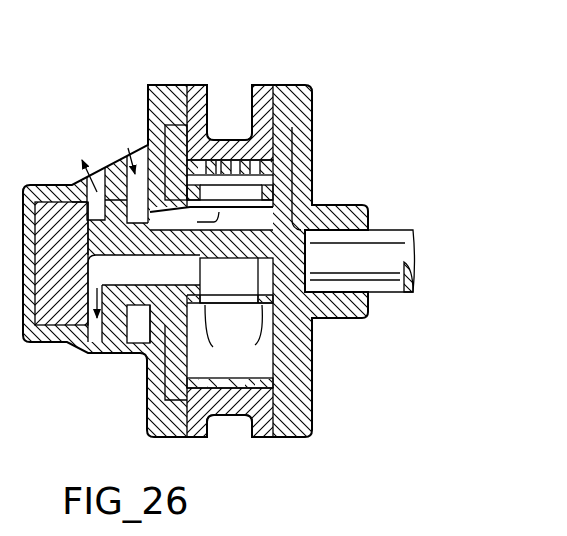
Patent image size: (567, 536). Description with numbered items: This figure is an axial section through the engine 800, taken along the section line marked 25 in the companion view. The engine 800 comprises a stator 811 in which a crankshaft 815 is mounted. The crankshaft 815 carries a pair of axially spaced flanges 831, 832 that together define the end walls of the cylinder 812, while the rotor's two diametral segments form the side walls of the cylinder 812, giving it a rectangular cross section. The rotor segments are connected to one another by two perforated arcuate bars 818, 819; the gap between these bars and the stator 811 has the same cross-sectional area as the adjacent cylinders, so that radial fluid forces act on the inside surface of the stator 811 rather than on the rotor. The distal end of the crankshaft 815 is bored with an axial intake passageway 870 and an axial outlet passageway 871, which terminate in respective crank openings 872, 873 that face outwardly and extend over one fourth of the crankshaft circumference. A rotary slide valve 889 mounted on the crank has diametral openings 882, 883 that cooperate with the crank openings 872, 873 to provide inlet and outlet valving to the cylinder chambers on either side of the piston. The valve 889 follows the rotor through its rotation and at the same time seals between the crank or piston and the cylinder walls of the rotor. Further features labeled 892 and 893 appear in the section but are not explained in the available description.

The engine 800 is at (381, 58).
The stator 811 is at (305, 87).
The crankshaft 815 is at (60, 198).
The perforated arcuate bar 818 is at (216, 168).
The perforated arcuate bar 819 is at (216, 390).
The flange 831 is at (172, 127).
The flange 832 is at (292, 125).
The axial intake passageway 870 is at (266, 228).
The axial outlet passageway 871 is at (197, 279).
The crank opening 872 is at (264, 197).
The crank opening 873 is at (262, 284).
The diametral opening 882 is at (240, 190).
The diametral opening 883 is at (239, 298).
The rotary slide valve 889 is at (150, 146).
The pocket 892 is at (129, 343).
The outlet passage 893 is at (80, 353).
The cylinder 812 is at (187, 367).
The section line 25 is at (228, 75).